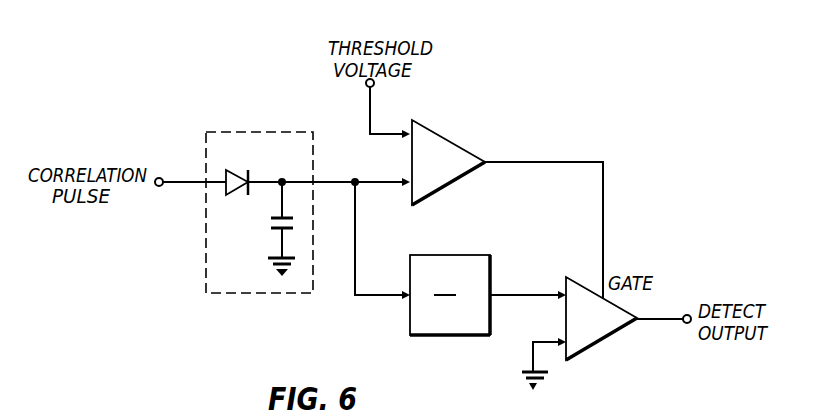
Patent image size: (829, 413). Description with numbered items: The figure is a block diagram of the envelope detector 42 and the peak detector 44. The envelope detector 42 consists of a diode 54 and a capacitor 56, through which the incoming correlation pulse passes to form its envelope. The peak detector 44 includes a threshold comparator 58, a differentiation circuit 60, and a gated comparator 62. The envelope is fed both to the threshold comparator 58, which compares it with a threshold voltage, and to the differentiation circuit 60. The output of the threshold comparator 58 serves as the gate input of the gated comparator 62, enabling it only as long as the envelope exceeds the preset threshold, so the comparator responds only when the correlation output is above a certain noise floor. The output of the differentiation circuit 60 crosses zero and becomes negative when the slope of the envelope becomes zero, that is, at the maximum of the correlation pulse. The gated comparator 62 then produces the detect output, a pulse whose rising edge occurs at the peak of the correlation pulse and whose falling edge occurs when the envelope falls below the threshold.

The envelope detector 42 is at (268, 301).
The peak detector 44 is at (533, 99).
The diode 54 is at (234, 172).
The capacitor 56 is at (272, 230).
The threshold comparator 58 is at (448, 145).
The differentiation circuit 60 is at (410, 319).
The gated comparator 62 is at (603, 333).